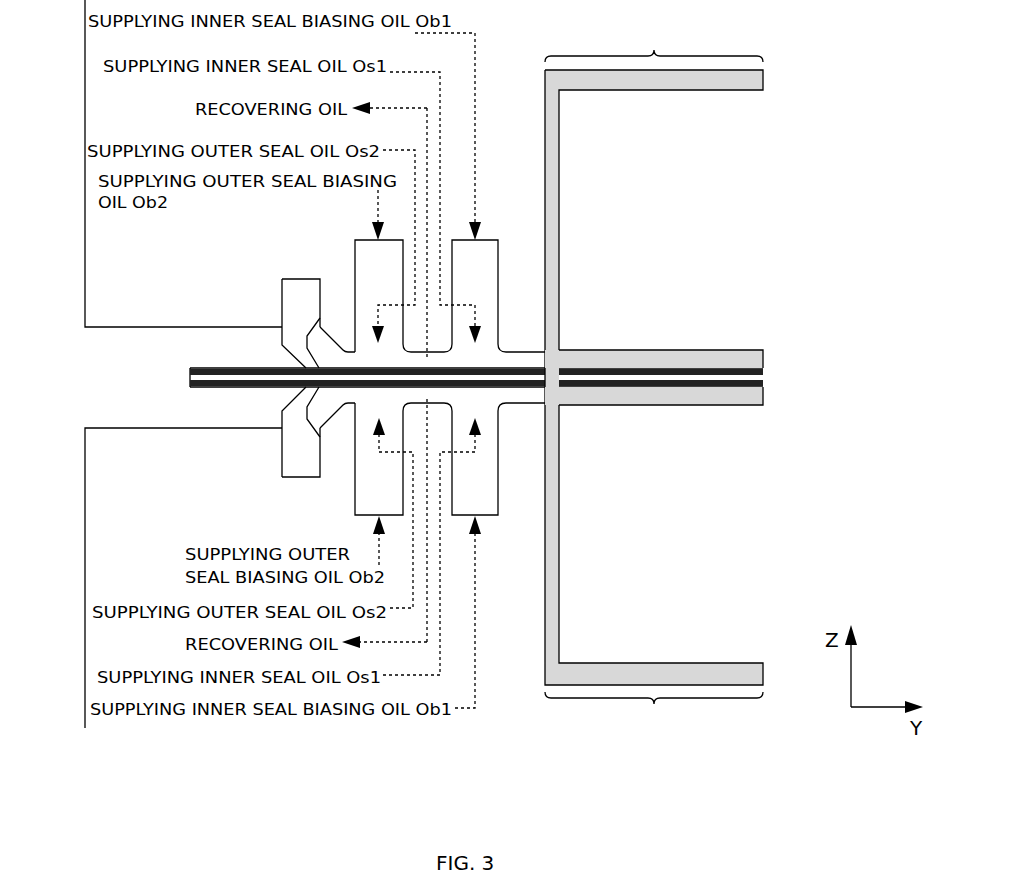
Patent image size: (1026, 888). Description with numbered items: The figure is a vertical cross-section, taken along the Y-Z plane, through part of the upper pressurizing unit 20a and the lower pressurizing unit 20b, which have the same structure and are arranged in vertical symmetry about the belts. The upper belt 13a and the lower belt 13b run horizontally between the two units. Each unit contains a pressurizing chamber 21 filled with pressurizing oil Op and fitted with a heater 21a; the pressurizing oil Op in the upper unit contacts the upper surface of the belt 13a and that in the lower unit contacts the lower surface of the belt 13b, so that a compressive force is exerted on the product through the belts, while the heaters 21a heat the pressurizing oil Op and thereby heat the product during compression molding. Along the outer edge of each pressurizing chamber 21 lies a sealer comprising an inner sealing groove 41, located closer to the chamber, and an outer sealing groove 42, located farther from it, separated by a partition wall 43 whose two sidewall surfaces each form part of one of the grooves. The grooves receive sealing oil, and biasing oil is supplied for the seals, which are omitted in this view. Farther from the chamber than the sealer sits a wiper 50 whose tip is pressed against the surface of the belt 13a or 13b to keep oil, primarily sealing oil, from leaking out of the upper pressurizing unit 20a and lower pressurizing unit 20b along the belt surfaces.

The belt 13a is at (207, 368).
The belt 13b is at (207, 387).
The upper pressurizing unit 20a is at (118, 252).
The lower pressurizing unit 20b is at (118, 512).
The pressurizing chamber 21 is at (654, 379).
The heater 21a is at (700, 240).
The inner sealing groove 41 is at (498, 272).
The outer sealing groove 42 is at (355, 267).
The partition wall 43 is at (438, 335).
The wiper 50 is at (295, 302).
The pressurizing oil Op is at (729, 80).